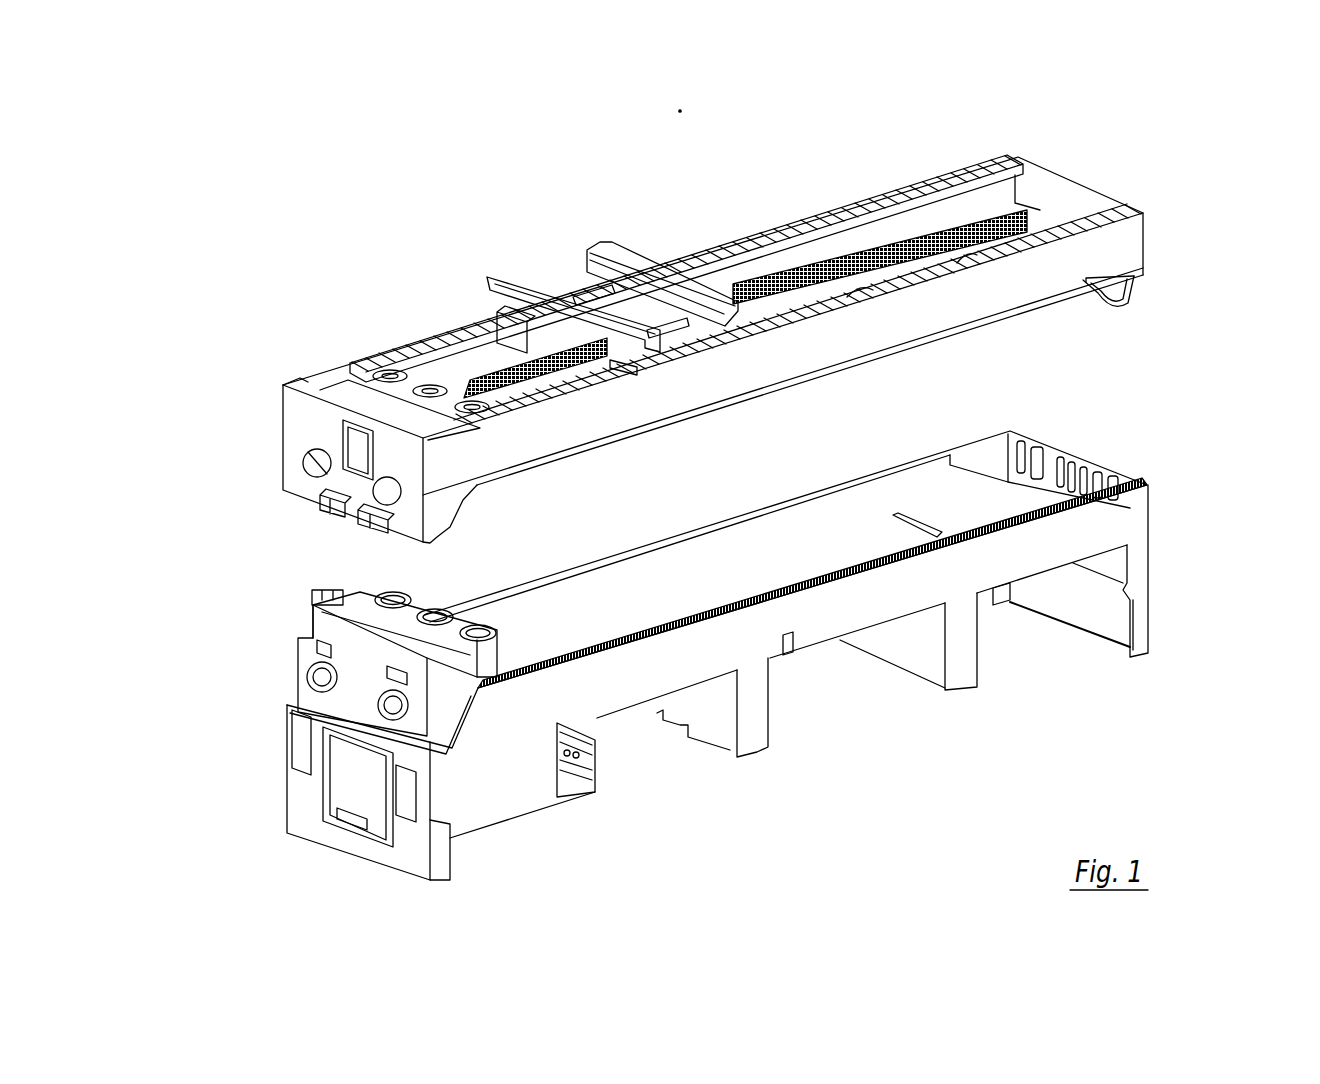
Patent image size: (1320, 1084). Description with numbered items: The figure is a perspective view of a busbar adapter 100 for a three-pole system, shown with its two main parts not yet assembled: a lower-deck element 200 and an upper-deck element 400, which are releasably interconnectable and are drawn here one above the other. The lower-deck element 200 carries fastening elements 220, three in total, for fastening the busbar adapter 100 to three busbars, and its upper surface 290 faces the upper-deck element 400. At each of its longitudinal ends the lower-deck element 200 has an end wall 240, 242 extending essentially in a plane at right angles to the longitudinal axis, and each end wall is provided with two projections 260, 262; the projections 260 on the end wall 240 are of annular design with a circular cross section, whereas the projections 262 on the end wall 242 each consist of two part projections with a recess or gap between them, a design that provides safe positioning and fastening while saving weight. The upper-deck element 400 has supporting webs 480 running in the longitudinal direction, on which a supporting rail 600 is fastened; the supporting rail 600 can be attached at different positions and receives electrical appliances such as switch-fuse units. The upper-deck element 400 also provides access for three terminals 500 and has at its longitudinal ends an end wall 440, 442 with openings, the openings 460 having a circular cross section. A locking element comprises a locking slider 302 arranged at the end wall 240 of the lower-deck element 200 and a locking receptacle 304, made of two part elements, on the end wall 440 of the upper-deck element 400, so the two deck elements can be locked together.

The busbar adapter 100 is at (280, 242).
The lower-deck element 200 is at (1173, 513).
The fastening elements 220 is at (575, 790).
The end wall 240 is at (307, 652).
The end wall 242 is at (1047, 457).
The projections 260 is at (380, 708).
The projections 262 is at (1037, 440).
The top surface 290 is at (740, 557).
The locking slider 302 is at (350, 790).
The locking receptacle 304 is at (370, 527).
The upper-deck element 400 is at (1175, 226).
The end wall 440 is at (300, 420).
The end wall 442 is at (1103, 295).
The openings 460 is at (380, 488).
The supporting webs 480 is at (1013, 212).
The terminals 500 is at (470, 406).
The supporting rail 600 is at (623, 253).